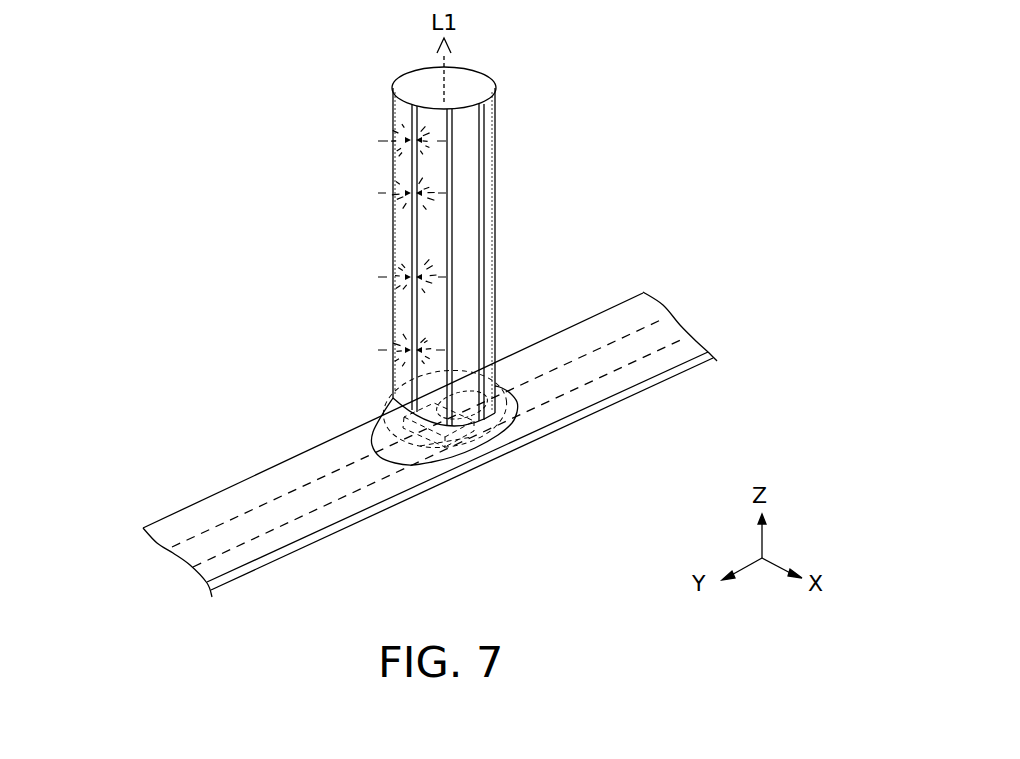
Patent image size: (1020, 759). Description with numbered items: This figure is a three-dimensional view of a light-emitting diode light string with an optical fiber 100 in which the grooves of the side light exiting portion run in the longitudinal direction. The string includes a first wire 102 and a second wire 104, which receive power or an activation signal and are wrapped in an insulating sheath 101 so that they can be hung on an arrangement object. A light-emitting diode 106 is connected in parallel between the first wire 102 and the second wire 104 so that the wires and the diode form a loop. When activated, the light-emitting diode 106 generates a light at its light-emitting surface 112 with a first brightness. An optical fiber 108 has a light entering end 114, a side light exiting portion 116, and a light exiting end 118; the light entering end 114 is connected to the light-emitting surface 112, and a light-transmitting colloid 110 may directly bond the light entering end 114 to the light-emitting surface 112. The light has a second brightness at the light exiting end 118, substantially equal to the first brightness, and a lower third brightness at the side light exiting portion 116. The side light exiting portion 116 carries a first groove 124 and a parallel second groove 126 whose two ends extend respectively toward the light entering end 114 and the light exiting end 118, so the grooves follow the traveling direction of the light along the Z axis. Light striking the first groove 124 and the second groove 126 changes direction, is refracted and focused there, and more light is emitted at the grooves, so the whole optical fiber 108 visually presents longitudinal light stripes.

The light-emitting diode light string with an optical fiber 100 is at (61, 82).
The insulating sheath 101 is at (690, 360).
The first wire 102 is at (230, 520).
The second wire 104 is at (248, 537).
The light-emitting diode 106 is at (481, 440).
The optical fiber 108 is at (392, 237).
The light-transmitting colloid 110 is at (377, 412).
The light-emitting surface 112 is at (475, 406).
The light entering end 114 is at (485, 445).
The side light exiting portion 116 is at (488, 218).
The light exiting end 118 is at (418, 94).
The first groove 124 is at (482, 160).
The second groove 126 is at (450, 250).